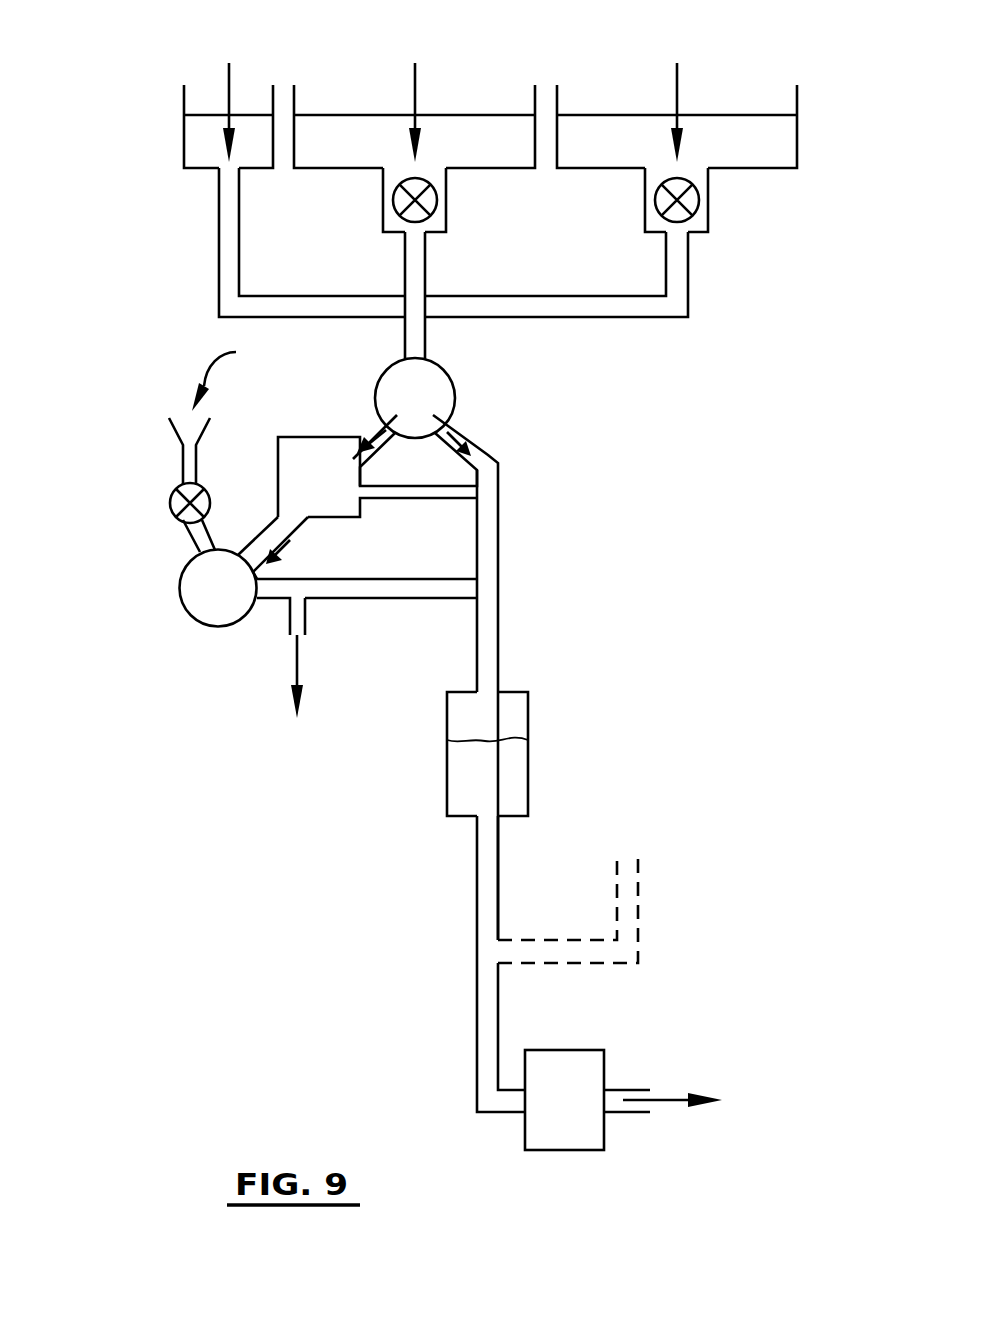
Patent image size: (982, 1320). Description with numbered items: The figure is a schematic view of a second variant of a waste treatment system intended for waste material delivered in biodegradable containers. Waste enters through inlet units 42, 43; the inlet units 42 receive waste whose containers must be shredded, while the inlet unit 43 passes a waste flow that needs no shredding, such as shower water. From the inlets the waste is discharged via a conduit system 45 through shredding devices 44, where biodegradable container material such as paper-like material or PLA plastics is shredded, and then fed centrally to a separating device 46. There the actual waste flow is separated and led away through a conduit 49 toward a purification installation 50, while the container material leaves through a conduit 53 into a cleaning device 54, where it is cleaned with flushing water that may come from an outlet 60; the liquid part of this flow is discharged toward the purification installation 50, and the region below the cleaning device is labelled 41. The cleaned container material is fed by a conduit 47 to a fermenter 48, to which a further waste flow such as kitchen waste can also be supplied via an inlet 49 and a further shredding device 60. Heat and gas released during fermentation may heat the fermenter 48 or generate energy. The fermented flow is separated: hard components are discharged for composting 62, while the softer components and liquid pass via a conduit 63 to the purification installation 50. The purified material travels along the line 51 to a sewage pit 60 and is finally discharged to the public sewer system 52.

The connection chamber 41 is at (298, 580).
The inlet unit 42 is at (415, 102).
The inlet unit 43 is at (184, 135).
The shredding device 44 is at (428, 202).
The conduit system 45 is at (278, 303).
The separating device 46 is at (432, 388).
The conduit 47 is at (268, 530).
The fermenter 48 is at (207, 613).
The conduit 49 is at (485, 455).
The purification installation 50 is at (463, 725).
The discharge line 51 is at (487, 893).
The public sewer system 52 is at (665, 1100).
The conduit 53 is at (373, 432).
The cleaning device 54 is at (303, 453).
The further shredding device 60 is at (183, 502).
The composting discharge 62 is at (292, 620).
The conduit 63 is at (381, 592).